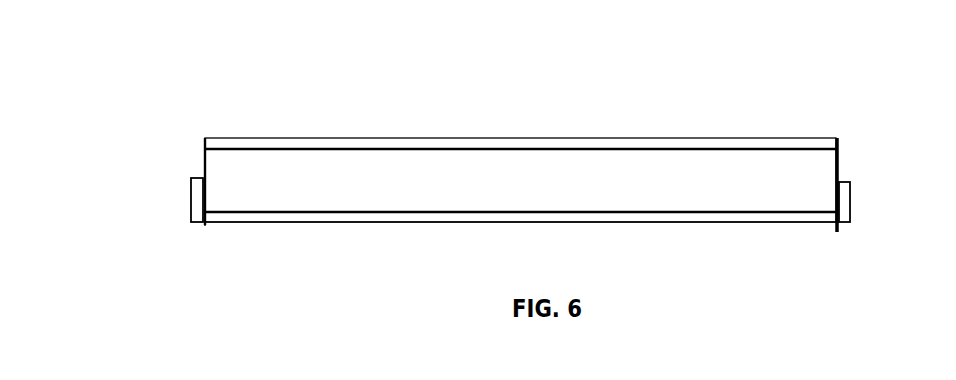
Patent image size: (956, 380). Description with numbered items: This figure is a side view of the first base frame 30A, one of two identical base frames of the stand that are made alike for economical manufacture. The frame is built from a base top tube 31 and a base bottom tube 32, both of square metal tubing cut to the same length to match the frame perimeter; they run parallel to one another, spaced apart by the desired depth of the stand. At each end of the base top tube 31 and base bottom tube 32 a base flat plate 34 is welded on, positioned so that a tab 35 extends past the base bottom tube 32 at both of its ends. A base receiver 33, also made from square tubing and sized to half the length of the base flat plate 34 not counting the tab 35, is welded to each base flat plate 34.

The first base frame 30A is at (571, 106).
The base top tube 31 is at (443, 130).
The base bottom tube 32 is at (408, 229).
The base receiver 33 is at (182, 196).
The base flat plate 34 is at (194, 146).
The tab 35 is at (198, 233).